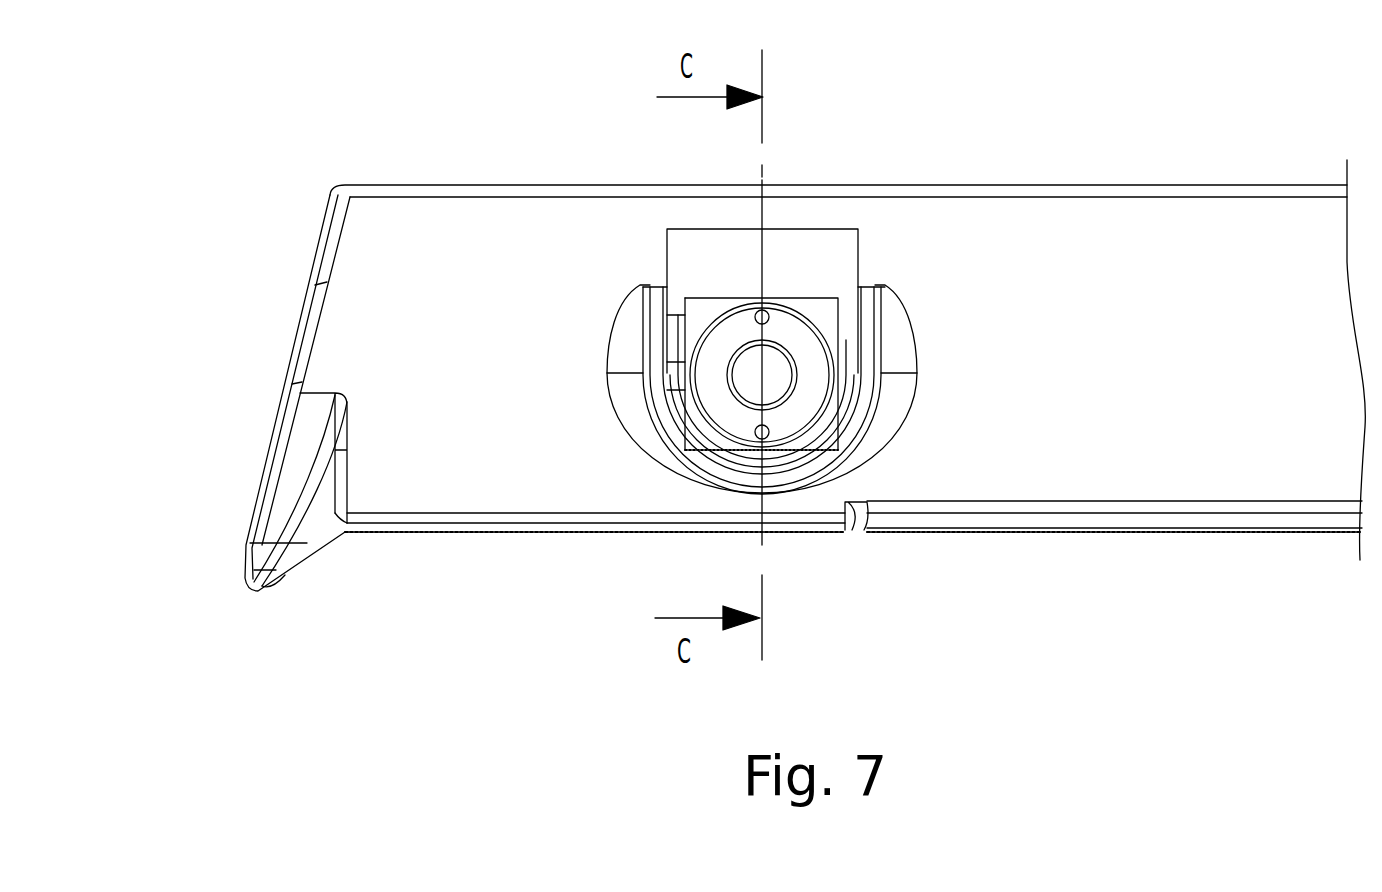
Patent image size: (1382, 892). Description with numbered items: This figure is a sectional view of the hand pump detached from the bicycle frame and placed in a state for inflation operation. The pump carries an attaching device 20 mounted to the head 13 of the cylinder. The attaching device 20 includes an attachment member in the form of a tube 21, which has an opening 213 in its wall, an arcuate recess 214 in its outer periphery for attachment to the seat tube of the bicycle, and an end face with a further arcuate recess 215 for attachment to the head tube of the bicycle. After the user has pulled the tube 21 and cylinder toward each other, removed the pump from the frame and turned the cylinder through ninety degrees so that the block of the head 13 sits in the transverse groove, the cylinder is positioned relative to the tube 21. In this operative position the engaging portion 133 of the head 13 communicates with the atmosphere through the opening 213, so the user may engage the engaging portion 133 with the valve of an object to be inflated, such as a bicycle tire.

The attaching device 20 is at (1096, 153).
The tube 21 is at (1133, 467).
The opening 213 is at (833, 252).
The arcuate recess 214 is at (443, 193).
The arcuate recess 215 is at (297, 355).
The head 13 is at (803, 402).
The engaging portion 133 is at (722, 402).